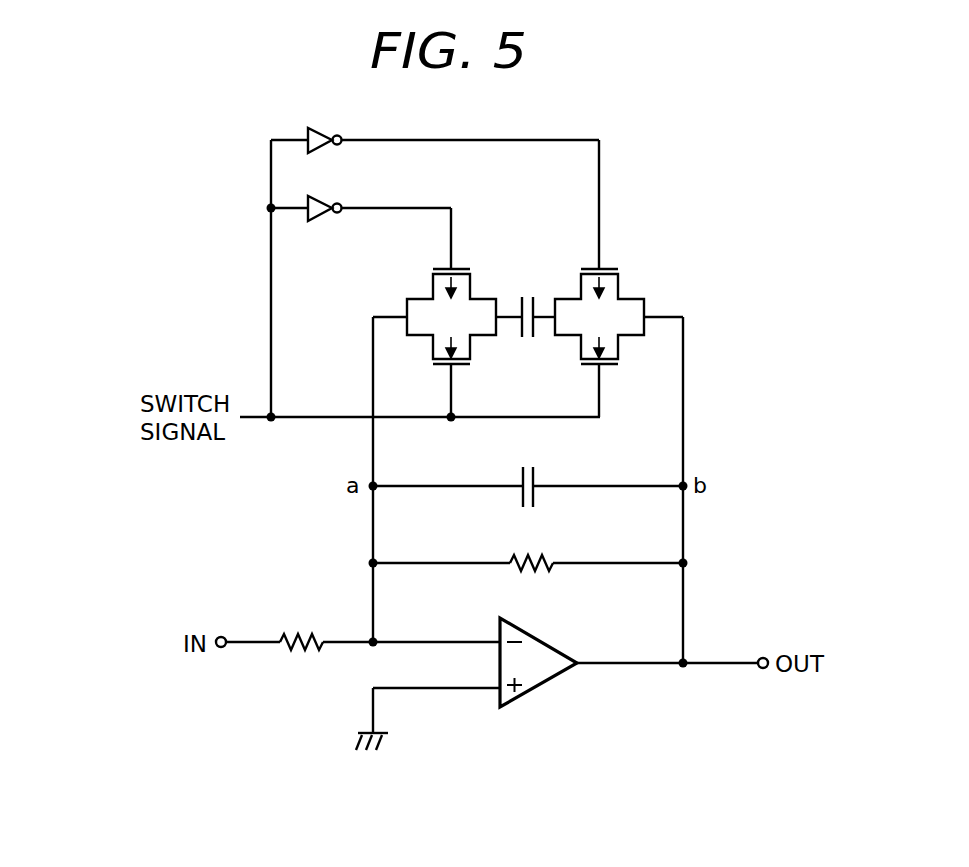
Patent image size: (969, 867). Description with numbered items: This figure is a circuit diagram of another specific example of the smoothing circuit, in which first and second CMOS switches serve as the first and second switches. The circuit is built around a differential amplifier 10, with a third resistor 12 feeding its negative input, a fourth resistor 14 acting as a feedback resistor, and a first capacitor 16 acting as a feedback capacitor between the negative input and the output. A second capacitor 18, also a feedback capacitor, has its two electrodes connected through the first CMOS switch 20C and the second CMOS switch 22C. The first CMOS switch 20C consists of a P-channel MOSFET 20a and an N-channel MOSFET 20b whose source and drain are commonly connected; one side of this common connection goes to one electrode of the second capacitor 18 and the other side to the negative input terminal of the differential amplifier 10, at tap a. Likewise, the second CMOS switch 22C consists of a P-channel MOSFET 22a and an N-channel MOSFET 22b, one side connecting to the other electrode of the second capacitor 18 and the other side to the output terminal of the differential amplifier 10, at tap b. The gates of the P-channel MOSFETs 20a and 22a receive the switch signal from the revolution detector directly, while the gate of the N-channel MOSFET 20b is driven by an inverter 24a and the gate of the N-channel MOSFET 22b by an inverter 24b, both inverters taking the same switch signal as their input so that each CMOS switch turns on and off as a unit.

The differential amplifier 10 is at (548, 690).
The third resistor 12 is at (305, 632).
The fourth resistor 14 is at (540, 572).
The first capacitor 16 is at (536, 470).
The second capacitor 18 is at (525, 292).
The first CMOS switch 20C is at (430, 312).
The P-channel MOSFET 20a is at (462, 368).
The N-channel MOSFET 20b is at (460, 268).
The second CMOS switch 22C is at (651, 281).
The P-channel MOSFET 22a is at (612, 370).
The N-channel MOSFET 22b is at (610, 268).
The inverter 24a is at (327, 197).
The inverter 24b is at (327, 128).